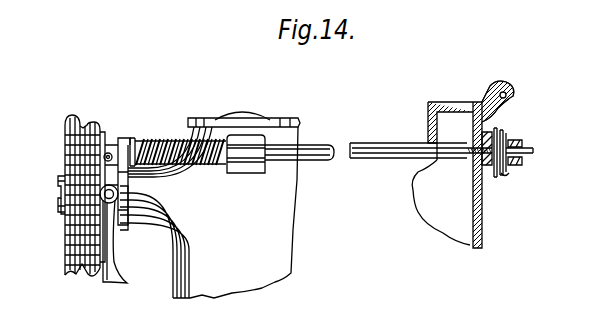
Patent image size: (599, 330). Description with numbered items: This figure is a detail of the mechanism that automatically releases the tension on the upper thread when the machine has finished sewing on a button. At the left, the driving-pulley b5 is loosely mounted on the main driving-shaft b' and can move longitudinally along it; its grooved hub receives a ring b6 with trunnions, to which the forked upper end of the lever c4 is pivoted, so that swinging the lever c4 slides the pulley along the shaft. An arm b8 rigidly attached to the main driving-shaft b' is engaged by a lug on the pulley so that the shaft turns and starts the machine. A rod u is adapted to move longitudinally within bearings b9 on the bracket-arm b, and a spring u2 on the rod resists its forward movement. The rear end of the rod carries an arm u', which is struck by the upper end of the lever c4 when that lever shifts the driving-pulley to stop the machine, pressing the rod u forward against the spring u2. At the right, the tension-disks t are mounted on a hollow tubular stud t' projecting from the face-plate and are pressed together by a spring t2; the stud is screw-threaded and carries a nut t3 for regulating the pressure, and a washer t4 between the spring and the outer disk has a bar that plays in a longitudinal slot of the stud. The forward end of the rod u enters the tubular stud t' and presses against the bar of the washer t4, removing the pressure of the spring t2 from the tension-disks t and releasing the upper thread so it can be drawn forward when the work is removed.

The bracket-arm b is at (317, 189).
The main driving-shaft b' is at (45, 194).
The driving-pulley b5 is at (72, 127).
The ring b6 is at (108, 152).
The arm b8 is at (63, 213).
The bearings b9 is at (253, 135).
The lever c4 is at (117, 269).
The rod u is at (378, 152).
The arm u' is at (135, 215).
The spring u2 is at (158, 140).
The tension-disks t is at (495, 159).
The hollow tubular stud t' is at (528, 155).
The spring t2 is at (514, 165).
The nut t3 is at (522, 144).
The washer t4 is at (504, 178).